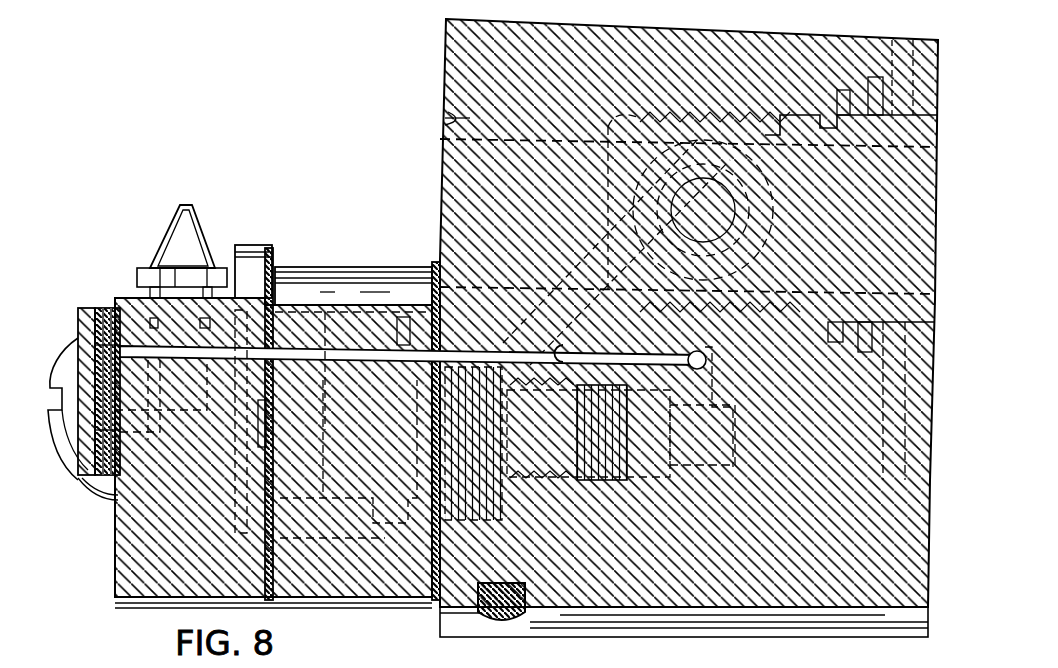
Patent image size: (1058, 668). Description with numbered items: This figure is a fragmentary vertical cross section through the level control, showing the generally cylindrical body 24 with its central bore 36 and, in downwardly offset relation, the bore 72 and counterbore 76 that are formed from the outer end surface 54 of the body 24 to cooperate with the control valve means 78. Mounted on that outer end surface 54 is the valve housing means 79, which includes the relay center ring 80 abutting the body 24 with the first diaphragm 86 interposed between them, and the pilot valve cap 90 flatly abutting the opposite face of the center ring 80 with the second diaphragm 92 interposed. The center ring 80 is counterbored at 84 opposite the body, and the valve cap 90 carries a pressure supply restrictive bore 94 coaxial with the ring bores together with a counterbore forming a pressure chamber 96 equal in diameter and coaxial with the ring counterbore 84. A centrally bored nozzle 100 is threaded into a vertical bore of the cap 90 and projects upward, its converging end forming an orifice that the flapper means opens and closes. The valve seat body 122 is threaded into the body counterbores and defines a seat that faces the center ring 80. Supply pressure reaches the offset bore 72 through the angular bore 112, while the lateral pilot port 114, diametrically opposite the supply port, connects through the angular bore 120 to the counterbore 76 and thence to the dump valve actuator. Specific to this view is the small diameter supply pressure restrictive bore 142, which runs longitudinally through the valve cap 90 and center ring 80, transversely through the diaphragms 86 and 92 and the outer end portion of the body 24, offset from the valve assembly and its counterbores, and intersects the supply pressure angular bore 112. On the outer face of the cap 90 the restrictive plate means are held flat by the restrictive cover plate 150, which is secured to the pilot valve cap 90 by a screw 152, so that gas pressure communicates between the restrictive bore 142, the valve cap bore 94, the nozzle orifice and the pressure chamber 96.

The body 24 is at (456, 67).
The outer end surface 54 is at (447, 118).
The central bore 36 is at (441, 158).
The nozzle 100 is at (182, 238).
The valve housing means 79 is at (254, 243).
The second diaphragm 92 is at (275, 265).
The relay center ring 80 is at (380, 266).
The first diaphragm 86 is at (436, 262).
The restrictive cover plate 150 is at (96, 308).
The screw 152 is at (64, 452).
The angular bore 120 is at (606, 262).
The lateral pilot port 114 is at (776, 216).
The supply pressure restrictive bore 142 is at (565, 352).
The angular bore 112 is at (722, 343).
The pressure supply restrictive bore 94 is at (162, 399).
The pressure chamber 96 is at (252, 540).
The pilot valve cap 90 is at (118, 548).
The control valve means 78 is at (376, 506).
The counterbore 84 is at (380, 545).
The counterbore 76 is at (505, 530).
The valve seat body 122 is at (576, 488).
The offset bore 72 is at (710, 472).